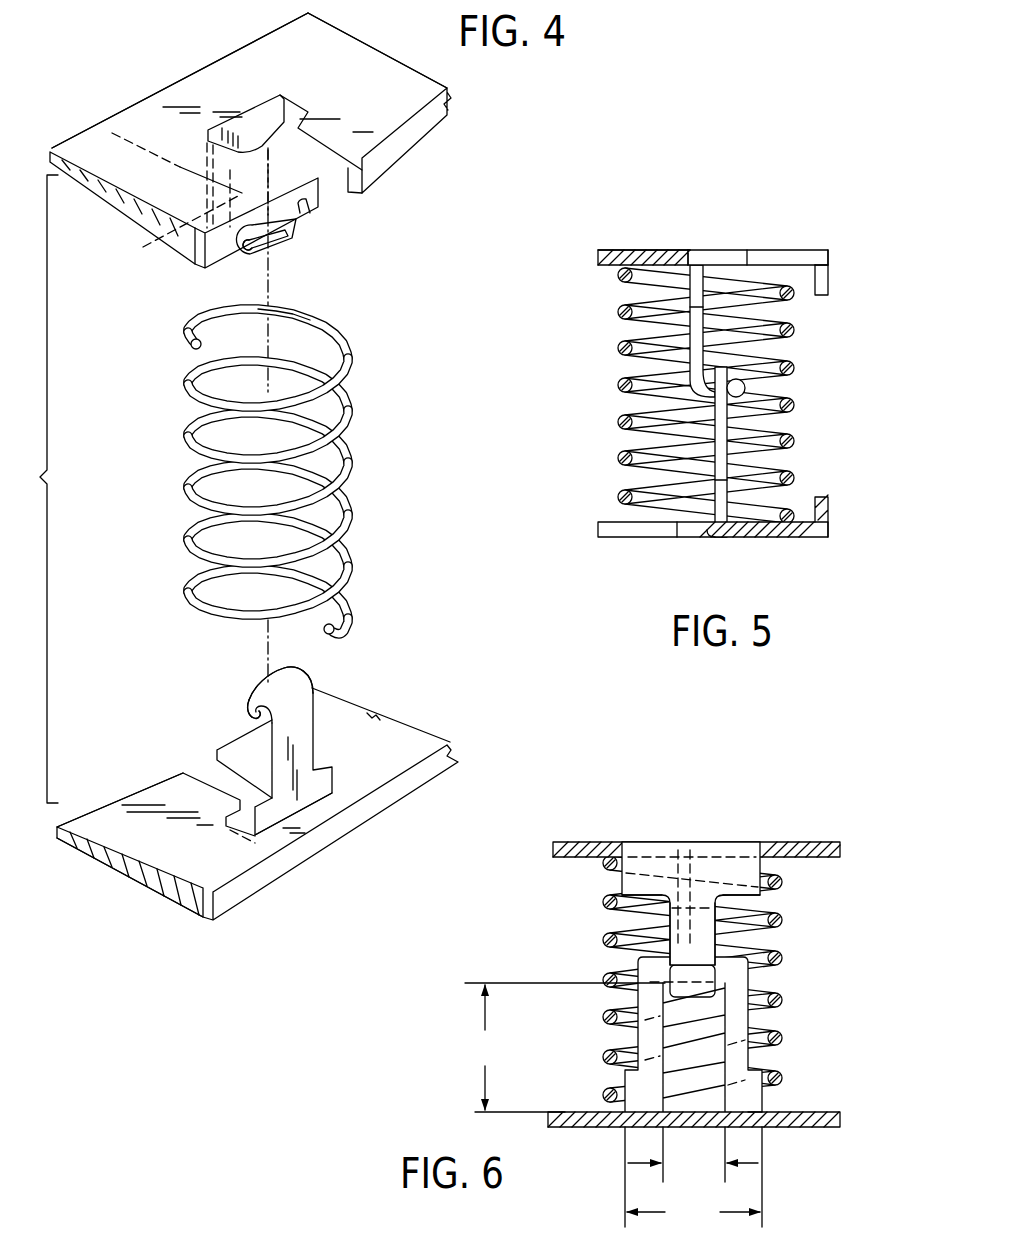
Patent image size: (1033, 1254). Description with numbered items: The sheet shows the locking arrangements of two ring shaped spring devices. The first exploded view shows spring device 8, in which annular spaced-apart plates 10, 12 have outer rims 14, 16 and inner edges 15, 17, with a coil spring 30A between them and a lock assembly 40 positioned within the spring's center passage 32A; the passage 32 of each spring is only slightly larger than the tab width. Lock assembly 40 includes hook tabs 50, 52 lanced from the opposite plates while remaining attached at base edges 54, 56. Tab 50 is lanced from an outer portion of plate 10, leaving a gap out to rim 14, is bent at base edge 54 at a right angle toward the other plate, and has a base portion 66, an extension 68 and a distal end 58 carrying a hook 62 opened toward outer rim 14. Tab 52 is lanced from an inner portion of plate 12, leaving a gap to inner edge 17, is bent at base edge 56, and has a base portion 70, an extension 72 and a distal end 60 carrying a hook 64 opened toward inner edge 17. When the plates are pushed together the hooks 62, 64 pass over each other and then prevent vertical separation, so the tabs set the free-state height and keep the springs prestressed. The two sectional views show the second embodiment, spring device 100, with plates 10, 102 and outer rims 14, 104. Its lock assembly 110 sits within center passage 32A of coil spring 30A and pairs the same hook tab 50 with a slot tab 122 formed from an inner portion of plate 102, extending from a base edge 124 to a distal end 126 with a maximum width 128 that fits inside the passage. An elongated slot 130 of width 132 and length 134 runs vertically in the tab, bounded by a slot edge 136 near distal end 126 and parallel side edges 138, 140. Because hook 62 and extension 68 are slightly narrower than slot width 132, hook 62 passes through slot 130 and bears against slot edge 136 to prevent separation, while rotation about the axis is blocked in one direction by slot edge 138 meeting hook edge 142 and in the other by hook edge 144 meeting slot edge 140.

In FIG. 4, the ring shaped spring device 8 is at (163, 937).
In FIG. 4, the plate 10 is at (322, 45).
In FIG. 5, the plate 10 is at (786, 253).
In FIG. 6, the plate 10 is at (578, 842).
In FIG. 4, the plate 12 is at (168, 858).
In FIG. 4, the outer rim 14 is at (430, 122).
In FIG. 5, the outer rim 14 is at (823, 283).
In FIG. 4, the inner edge 15 is at (205, 73).
In FIG. 5, the inner edge 15 is at (598, 256).
In FIG. 4, the outer rim 16 is at (437, 767).
In FIG. 4, the inner edge 17 is at (148, 787).
In FIG. 4, the coil spring 30A is at (335, 412).
In FIG. 5, the coil spring 30A is at (793, 330).
In FIG. 6, the coil spring 30A is at (607, 1107).
In FIG. 6, the passage 32 is at (652, 903).
In FIG. 4, the center passage 32A is at (298, 330).
In FIG. 5, the center passage 32A is at (755, 302).
In FIG. 4, the lock assembly 40 is at (335, 210).
In FIG. 4, the hook tab 50 is at (171, 228).
In FIG. 5, the hook tab 50 is at (688, 334).
In FIG. 6, the hook tab 50 is at (660, 930).
In FIG. 4, the hook tab 52 is at (312, 728).
In FIG. 4, the base edge 54 is at (205, 118).
In FIG. 5, the base edge 54 is at (686, 256).
In FIG. 6, the base edge 54 is at (672, 840).
In FIG. 4, the base edge 56 is at (277, 828).
In FIG. 4, the distal end 58 is at (296, 243).
In FIG. 5, the distal end 58 is at (708, 402).
In FIG. 6, the distal end 58 is at (673, 993).
In FIG. 4, the distal end 60 is at (262, 695).
In FIG. 4, the hook 62 is at (255, 253).
In FIG. 5, the hook 62 is at (700, 397).
In FIG. 6, the hook 62 is at (650, 955).
In FIG. 4, the hook 64 is at (290, 692).
In FIG. 4, the base portion 66 is at (262, 122).
In FIG. 5, the base portion 66 is at (698, 267).
In FIG. 6, the base portion 66 is at (735, 860).
In FIG. 4, the extension 68 is at (125, 135).
In FIG. 5, the extension 68 is at (690, 350).
In FIG. 6, the extension 68 is at (705, 928).
In FIG. 4, the base portion 70 is at (290, 813).
In FIG. 4, the extension 72 is at (295, 757).
In FIG. 5, the ring shaped spring device 100 is at (770, 205).
In FIG. 6, the ring shaped spring device 100 is at (770, 795).
In FIG. 5, the plate 102 is at (767, 537).
In FIG. 6, the plate 102 is at (810, 1128).
In FIG. 5, the outer rim 104 is at (830, 508).
In FIG. 5, the lock assembly 110 is at (670, 438).
In FIG. 6, the lock assembly 110 is at (615, 1005).
In FIG. 5, the slot tab 122 is at (725, 443).
In FIG. 6, the slot tab 122 is at (742, 1055).
In FIG. 5, the base edge 124 is at (732, 535).
In FIG. 6, the base edge 124 is at (762, 1127).
In FIG. 5, the distal end 126 is at (821, 256).
In FIG. 6, the distal end 126 is at (700, 960).
In FIG. 6, the maximum width 128 is at (693, 1177).
In FIG. 5, the elongated slot 130 is at (727, 460).
In FIG. 6, the elongated slot 130 is at (718, 1010).
In FIG. 6, the slot width 132 is at (693, 1154).
In FIG. 6, the slot length 134 is at (562, 1047).
In FIG. 5, the slot edge 136 is at (732, 382).
In FIG. 6, the slot edge 136 is at (735, 983).
In FIG. 6, the side edge 138 is at (662, 1040).
In FIG. 6, the side edge 140 is at (727, 1030).
In FIG. 5, the hook edge 142 is at (745, 392).
In FIG. 6, the hook edge 142 is at (687, 968).
In FIG. 6, the hook edge 144 is at (723, 978).